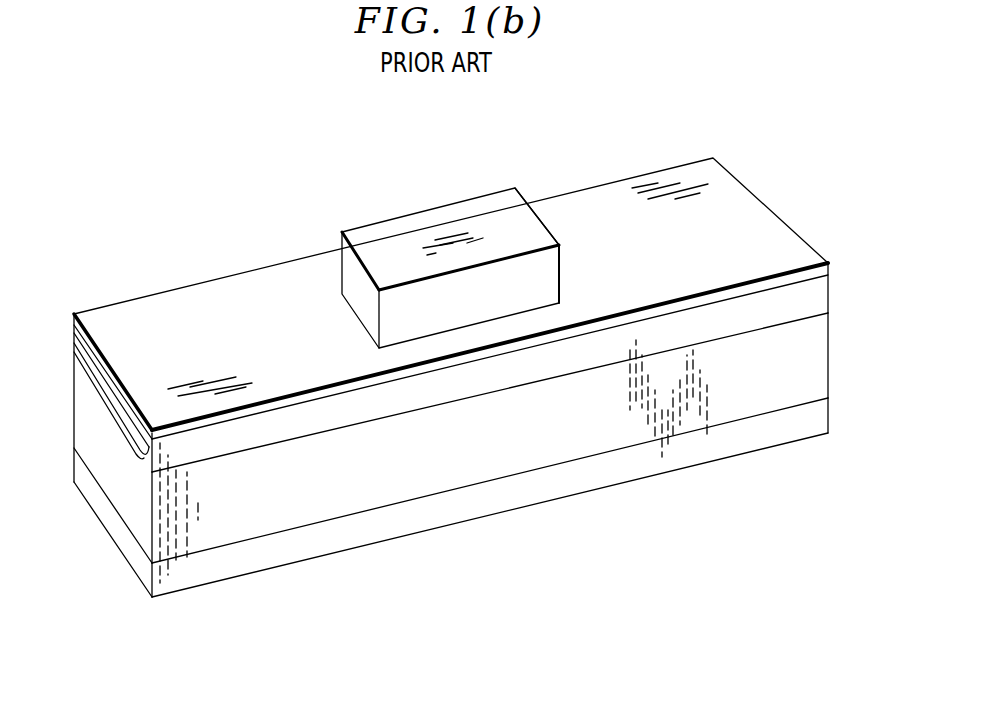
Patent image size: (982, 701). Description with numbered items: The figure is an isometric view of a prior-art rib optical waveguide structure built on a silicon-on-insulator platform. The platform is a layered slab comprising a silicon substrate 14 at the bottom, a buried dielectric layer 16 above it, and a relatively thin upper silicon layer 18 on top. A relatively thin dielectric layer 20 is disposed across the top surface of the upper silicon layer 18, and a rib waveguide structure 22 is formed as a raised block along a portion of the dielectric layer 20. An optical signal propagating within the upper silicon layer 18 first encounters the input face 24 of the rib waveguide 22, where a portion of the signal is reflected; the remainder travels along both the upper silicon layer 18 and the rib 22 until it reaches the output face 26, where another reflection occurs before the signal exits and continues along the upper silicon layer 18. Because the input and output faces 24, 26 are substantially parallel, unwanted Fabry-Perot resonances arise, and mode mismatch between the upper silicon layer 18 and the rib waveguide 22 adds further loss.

The silicon substrate 14 is at (826, 418).
The buried dielectric layer 16 is at (826, 357).
The upper silicon layer 18 is at (826, 296).
The dielectric layer 20 is at (198, 305).
The rib waveguide structure 22 is at (447, 225).
The input face 24 is at (350, 278).
The output face 26 is at (550, 230).